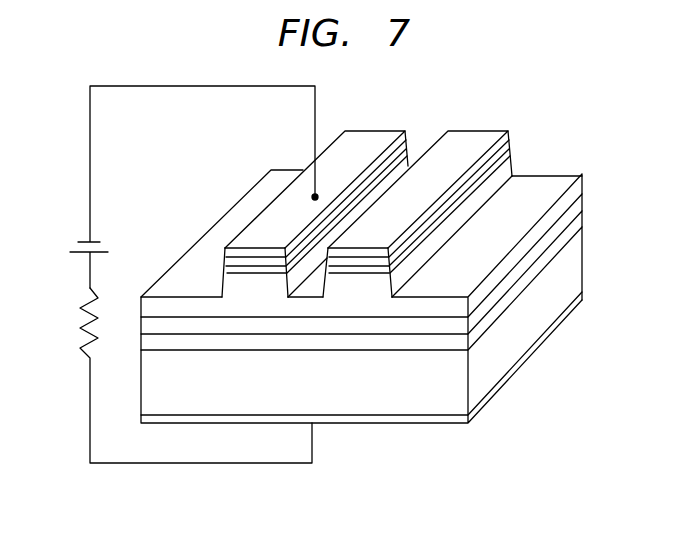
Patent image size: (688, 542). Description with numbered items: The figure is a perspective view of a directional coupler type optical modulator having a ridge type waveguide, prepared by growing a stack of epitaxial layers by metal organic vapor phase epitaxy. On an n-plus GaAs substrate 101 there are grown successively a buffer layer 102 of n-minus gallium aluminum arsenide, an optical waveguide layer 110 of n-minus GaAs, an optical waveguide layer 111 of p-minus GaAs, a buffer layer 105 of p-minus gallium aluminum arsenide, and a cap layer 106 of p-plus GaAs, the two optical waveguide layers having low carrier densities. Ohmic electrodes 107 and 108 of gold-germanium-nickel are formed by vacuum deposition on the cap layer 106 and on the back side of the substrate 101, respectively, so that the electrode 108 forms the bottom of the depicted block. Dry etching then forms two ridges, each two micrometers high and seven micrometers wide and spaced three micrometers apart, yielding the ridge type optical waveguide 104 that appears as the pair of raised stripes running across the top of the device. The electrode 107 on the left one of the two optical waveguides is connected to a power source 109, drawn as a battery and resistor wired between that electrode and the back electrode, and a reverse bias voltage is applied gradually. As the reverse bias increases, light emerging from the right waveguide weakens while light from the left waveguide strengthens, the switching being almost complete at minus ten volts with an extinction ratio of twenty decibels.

The substrate 101 is at (468, 383).
The buffer layer 102 is at (468, 343).
The ridge type optical waveguide 104 is at (514, 162).
The buffer layer 105 is at (512, 153).
The cap layer 106 is at (509, 141).
The ohmic electrode 107 is at (470, 131).
The ohmic electrode 108 is at (403, 425).
The power source 109 is at (80, 253).
The optical waveguide layer 110 is at (468, 325).
The optical waveguide layer 111 is at (468, 305).